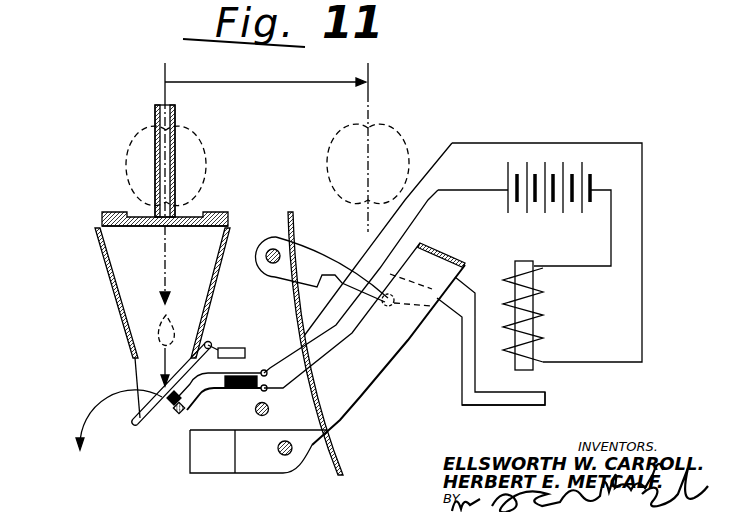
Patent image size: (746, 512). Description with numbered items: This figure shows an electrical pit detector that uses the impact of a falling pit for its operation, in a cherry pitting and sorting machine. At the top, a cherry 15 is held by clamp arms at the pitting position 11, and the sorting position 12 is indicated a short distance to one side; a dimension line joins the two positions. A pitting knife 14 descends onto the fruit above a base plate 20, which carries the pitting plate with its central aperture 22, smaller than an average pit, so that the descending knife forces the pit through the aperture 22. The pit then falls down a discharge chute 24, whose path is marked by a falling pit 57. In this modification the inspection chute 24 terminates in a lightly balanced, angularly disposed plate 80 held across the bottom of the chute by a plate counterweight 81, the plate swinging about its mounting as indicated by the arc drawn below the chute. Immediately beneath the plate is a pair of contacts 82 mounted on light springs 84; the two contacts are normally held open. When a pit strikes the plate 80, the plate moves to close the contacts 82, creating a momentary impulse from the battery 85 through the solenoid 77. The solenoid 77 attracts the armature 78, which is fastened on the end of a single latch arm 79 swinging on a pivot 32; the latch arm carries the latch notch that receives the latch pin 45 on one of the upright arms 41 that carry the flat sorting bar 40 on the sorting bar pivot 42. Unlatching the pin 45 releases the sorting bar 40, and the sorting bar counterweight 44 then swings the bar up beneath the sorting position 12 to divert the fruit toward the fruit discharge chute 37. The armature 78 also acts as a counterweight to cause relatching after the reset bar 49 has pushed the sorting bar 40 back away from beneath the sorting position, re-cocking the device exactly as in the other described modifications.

The pitting position 11 is at (165, 77).
The sorting position 12 is at (371, 74).
The pitting knife 14 is at (176, 120).
The cherry 15 is at (200, 165).
The base plate 20 is at (216, 212).
The central aperture 22 is at (142, 227).
The discharge chute 24 is at (110, 295).
The pivot 32 is at (268, 250).
The fruit discharge chute 37 is at (360, 450).
The sorting bar 40 is at (447, 256).
The upright arms 41 is at (367, 377).
The sorting bar pivot 42 is at (285, 457).
The sorting bar counterweight 44 is at (212, 462).
The latch pin 45 is at (388, 306).
The reset bar 49 is at (268, 404).
The drop 57 is at (172, 318).
The solenoid 77 is at (545, 315).
The armature 78 is at (546, 391).
The latch arm 79 is at (330, 257).
The angularly disposed plate 80 is at (140, 420).
The plate counterweight 81 is at (232, 348).
The contacts 82 is at (181, 408).
The light springs 84 is at (209, 390).
The battery 85 is at (592, 181).